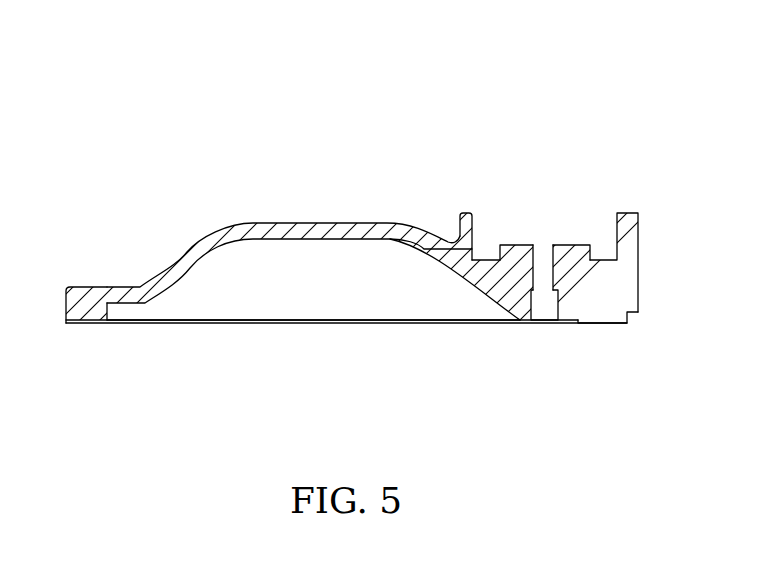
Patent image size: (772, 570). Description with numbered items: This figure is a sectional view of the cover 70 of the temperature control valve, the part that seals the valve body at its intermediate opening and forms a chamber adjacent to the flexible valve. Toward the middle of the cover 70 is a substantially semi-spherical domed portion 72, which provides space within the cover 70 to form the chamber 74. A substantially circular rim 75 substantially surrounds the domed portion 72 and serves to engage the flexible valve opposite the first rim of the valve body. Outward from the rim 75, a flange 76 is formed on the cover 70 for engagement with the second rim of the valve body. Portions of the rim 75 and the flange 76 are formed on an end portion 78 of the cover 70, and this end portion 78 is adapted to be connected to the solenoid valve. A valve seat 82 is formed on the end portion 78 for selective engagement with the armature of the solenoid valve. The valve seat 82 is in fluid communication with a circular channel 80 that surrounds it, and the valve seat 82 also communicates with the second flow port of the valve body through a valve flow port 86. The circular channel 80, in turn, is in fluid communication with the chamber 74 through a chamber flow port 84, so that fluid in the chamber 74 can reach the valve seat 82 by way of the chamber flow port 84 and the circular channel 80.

The cover 70 is at (127, 141).
The domed portion 72 is at (333, 224).
The chamber 74 is at (323, 281).
The rim 75 is at (98, 325).
The flange 76 is at (69, 324).
The end portion 78 is at (639, 278).
The circular channel 80 is at (488, 249).
The valve seat 82 is at (553, 247).
The chamber flow port 84 is at (448, 239).
The valve flow port 86 is at (545, 300).